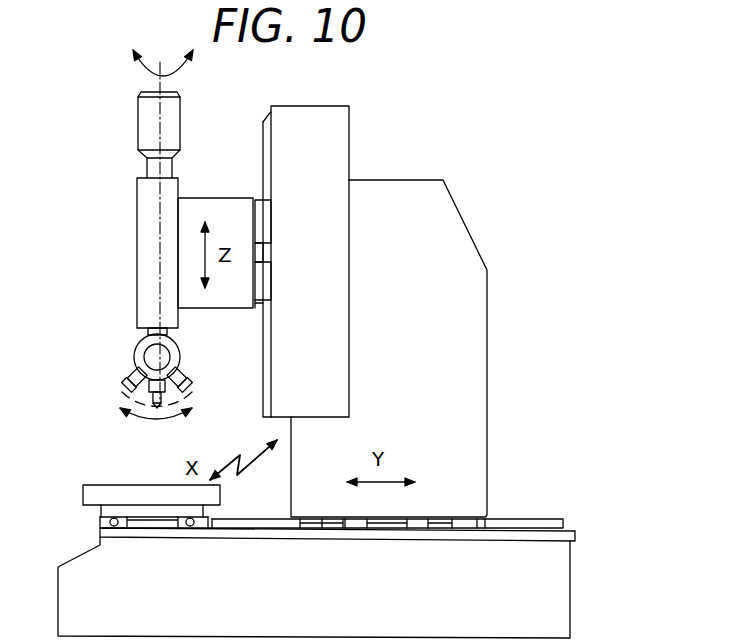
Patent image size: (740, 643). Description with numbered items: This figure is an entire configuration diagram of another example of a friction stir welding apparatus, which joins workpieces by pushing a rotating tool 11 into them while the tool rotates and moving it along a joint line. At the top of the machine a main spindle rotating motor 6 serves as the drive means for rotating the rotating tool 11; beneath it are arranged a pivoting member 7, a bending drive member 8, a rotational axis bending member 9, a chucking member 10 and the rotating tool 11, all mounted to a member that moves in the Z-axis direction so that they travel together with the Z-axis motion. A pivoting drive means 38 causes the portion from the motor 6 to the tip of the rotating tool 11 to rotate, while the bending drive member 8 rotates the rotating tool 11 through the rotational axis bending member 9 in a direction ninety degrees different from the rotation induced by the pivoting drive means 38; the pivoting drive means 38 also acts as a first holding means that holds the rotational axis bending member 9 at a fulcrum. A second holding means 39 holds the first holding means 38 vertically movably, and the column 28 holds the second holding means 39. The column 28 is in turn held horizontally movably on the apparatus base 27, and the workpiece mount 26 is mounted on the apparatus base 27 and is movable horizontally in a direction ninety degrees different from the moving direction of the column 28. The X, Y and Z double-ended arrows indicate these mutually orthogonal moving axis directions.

The main spindle rotating motor 6 is at (150, 122).
The pivoting member 7 is at (150, 252).
The bending drive member 8 is at (163, 356).
The rotational axis bending member 9 is at (133, 347).
The chucking member 10 is at (118, 394).
The rotating tool 11 is at (196, 407).
The workpiece mount 26 is at (95, 495).
The apparatus base 27 is at (540, 578).
The column 28 is at (468, 421).
The pivoting drive means 38 is at (215, 197).
The second holding means 39 is at (350, 129).